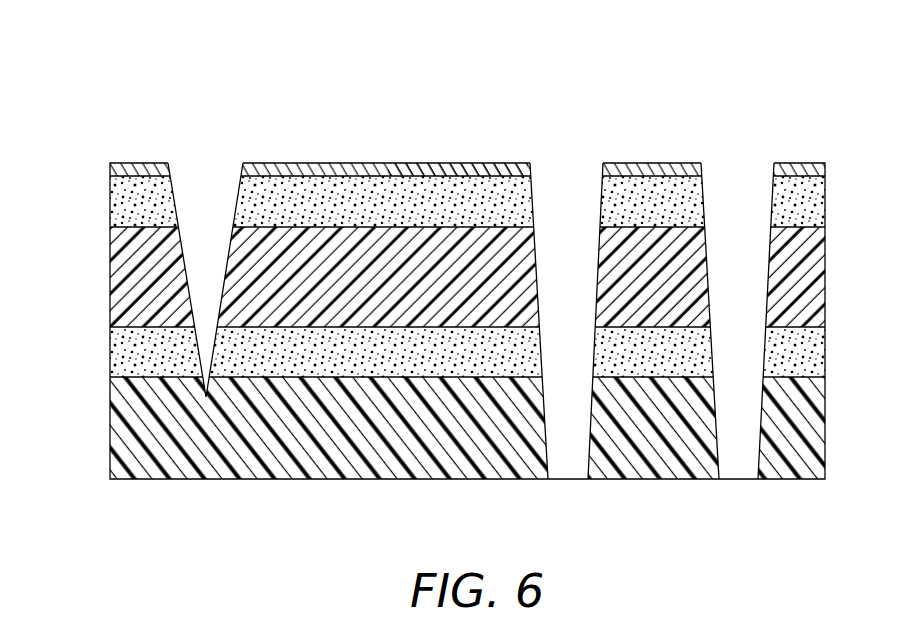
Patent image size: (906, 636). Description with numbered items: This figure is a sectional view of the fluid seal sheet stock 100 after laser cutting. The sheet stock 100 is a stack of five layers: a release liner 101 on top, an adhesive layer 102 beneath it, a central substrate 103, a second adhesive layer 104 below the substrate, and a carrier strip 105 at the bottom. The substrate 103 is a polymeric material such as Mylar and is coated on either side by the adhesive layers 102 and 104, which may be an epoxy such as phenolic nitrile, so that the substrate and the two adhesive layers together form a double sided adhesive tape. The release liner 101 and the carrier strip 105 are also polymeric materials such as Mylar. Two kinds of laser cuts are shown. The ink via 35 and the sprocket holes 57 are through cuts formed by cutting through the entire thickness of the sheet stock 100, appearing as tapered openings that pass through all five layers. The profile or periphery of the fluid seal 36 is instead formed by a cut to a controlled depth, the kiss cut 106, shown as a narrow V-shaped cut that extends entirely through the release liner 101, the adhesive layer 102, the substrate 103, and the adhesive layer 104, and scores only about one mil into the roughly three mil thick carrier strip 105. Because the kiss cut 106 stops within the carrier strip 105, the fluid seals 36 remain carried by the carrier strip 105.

The sheet stock 100 is at (135, 125).
The release liner 101 is at (110, 172).
The adhesive layer 102 is at (110, 208).
The substrate 103 is at (110, 278).
The adhesive layer 104 is at (110, 354).
The carrier strip 105 is at (110, 435).
The kiss cut 106 is at (175, 194).
The fluid seal 36 is at (388, 160).
The ink via 35 is at (537, 196).
The sprocket holes 57 is at (706, 197).